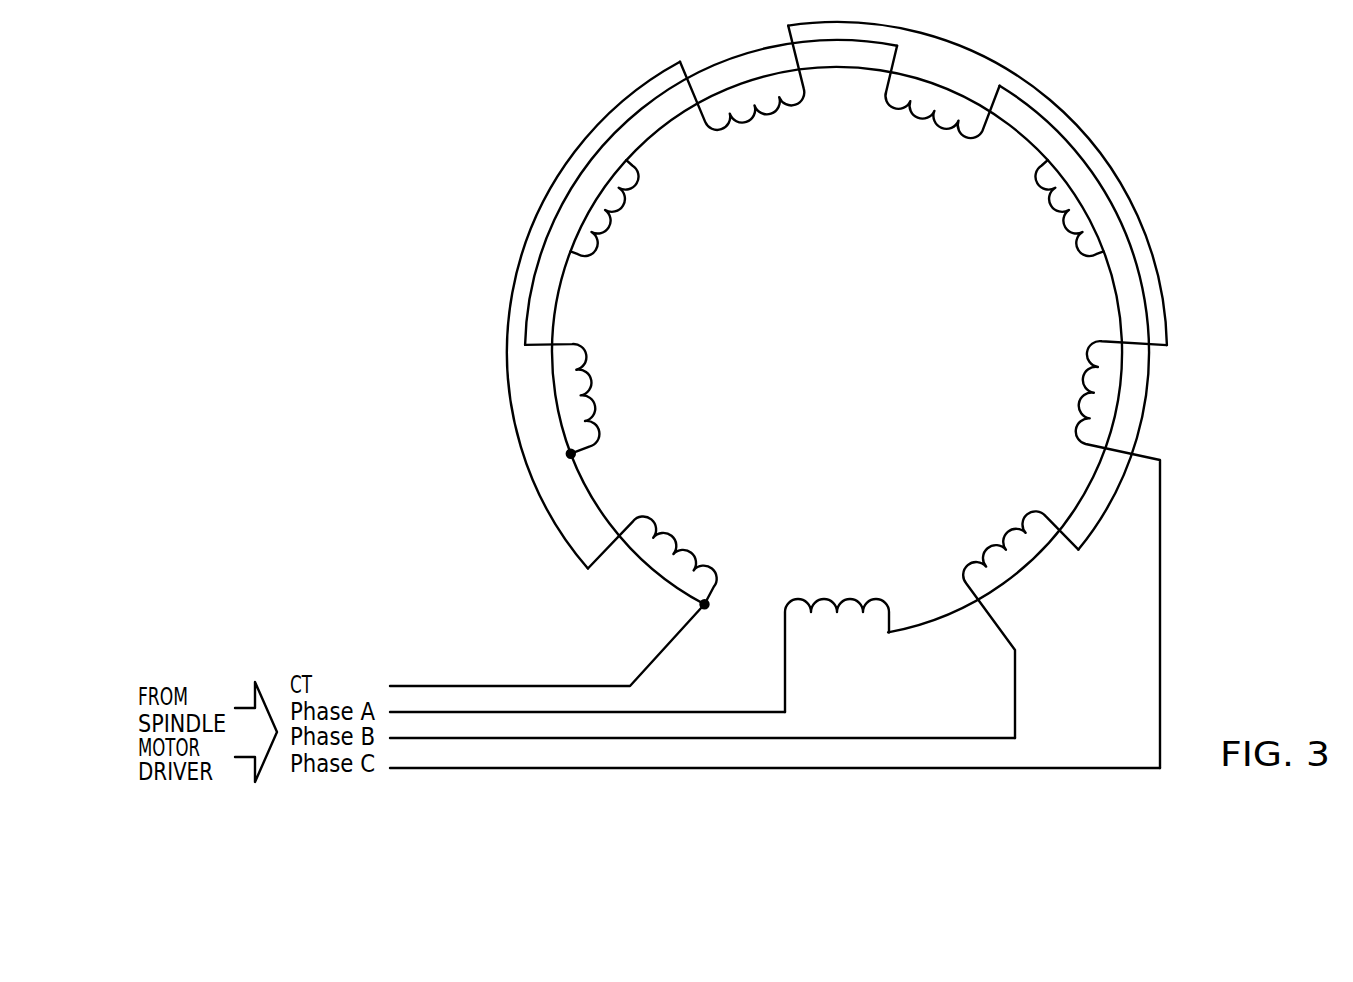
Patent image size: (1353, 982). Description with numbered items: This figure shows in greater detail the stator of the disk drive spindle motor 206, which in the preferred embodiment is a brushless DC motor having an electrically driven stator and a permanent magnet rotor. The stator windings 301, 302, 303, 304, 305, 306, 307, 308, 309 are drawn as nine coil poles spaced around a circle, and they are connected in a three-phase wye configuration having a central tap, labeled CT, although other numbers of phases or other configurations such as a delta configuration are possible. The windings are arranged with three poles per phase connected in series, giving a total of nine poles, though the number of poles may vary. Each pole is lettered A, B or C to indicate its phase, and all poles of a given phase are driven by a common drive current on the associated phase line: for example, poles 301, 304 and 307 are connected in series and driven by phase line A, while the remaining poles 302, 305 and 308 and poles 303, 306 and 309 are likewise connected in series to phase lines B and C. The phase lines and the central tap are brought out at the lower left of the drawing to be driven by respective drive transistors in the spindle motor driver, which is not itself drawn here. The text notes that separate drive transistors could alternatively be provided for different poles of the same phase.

The spindle motor 206 is at (493, 158).
The stator winding 301 is at (881, 600).
The stator winding 302 is at (1010, 527).
The stator winding 303 is at (1082, 348).
The stator winding 304 is at (1036, 196).
The stator winding 305 is at (891, 115).
The stator winding 306 is at (735, 135).
The stator winding 307 is at (619, 258).
The stator winding 308 is at (612, 433).
The stator winding 309 is at (660, 527).